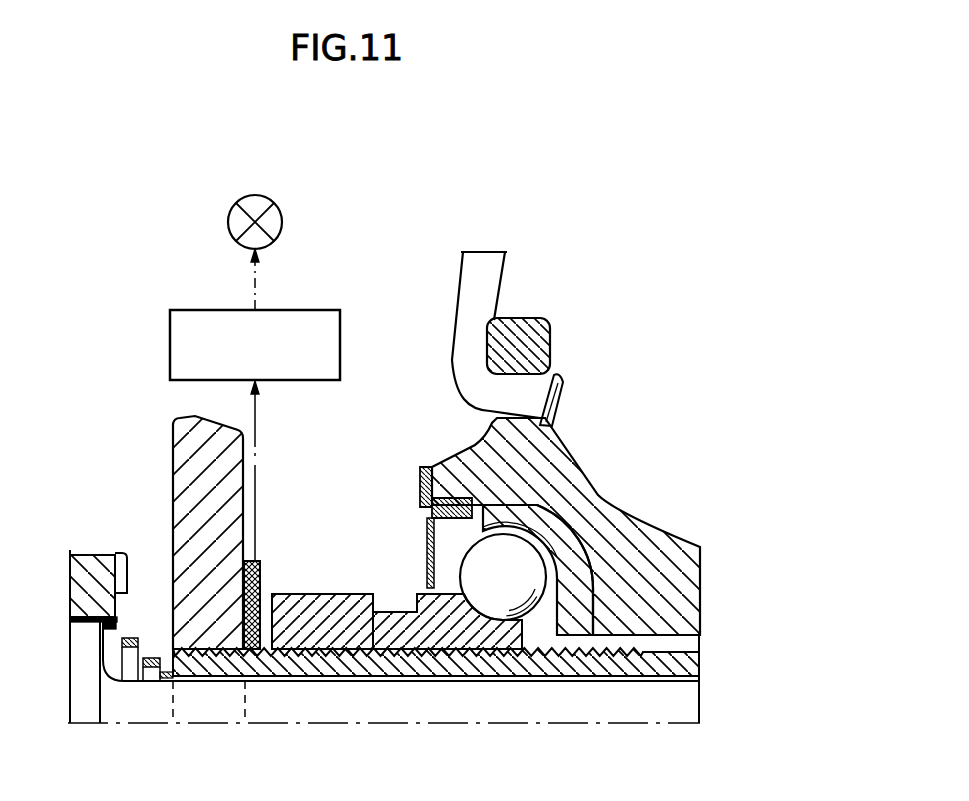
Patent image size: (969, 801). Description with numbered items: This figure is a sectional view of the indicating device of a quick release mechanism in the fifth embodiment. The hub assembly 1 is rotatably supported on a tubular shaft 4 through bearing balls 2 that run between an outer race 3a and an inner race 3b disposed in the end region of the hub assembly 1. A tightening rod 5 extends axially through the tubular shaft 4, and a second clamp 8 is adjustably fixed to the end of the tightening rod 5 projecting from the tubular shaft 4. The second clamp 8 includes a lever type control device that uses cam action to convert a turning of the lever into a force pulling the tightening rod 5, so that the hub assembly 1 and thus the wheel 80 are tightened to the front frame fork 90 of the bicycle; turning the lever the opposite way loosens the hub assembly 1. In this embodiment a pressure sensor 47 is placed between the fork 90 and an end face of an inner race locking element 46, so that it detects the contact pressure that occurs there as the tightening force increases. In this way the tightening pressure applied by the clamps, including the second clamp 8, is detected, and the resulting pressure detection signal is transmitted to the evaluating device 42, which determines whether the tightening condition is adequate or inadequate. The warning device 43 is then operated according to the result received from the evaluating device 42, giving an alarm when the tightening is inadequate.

The hub assembly 1 is at (565, 436).
The bearing balls 2 is at (527, 552).
The outer race 3a is at (595, 570).
The inner race 3b is at (482, 635).
The tubular shaft 4 is at (667, 657).
The tightening rod 5 is at (591, 712).
The second clamp 8 is at (93, 550).
The evaluating device 42 is at (340, 338).
The warning device 43 is at (283, 221).
The inner race locking element 46 is at (350, 594).
The pressure sensor 47 is at (262, 572).
The wheel 80 is at (452, 283).
The fork 90 is at (173, 440).